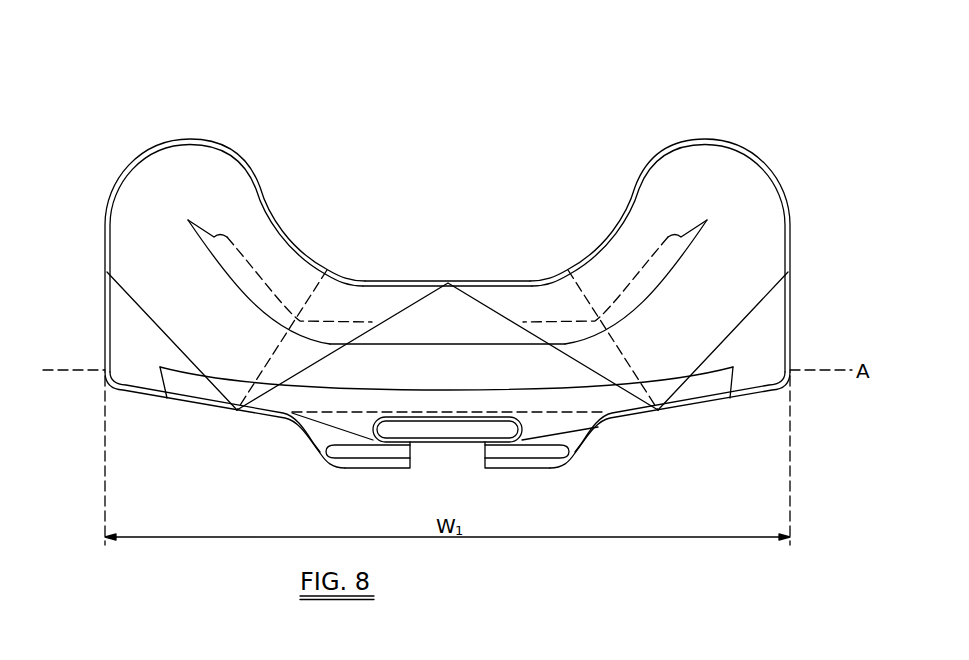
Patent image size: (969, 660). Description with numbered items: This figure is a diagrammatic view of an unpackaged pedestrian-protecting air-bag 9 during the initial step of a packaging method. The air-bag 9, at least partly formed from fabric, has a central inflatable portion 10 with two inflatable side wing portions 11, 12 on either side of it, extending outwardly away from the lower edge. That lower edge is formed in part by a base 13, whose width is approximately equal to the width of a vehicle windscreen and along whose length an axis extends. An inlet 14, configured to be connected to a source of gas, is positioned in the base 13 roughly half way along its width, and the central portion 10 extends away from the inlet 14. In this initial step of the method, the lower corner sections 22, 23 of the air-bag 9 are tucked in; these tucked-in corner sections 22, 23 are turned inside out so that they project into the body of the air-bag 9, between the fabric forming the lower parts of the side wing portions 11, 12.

The air-bag 9 is at (454, 274).
The central inflatable portion 10 is at (433, 313).
The side wing portion 11 is at (147, 197).
The side wing portion 12 is at (747, 200).
The base 13 is at (292, 412).
The inlet 14 is at (437, 450).
The lower corner section 22 is at (123, 335).
The lower corner section 23 is at (768, 337).